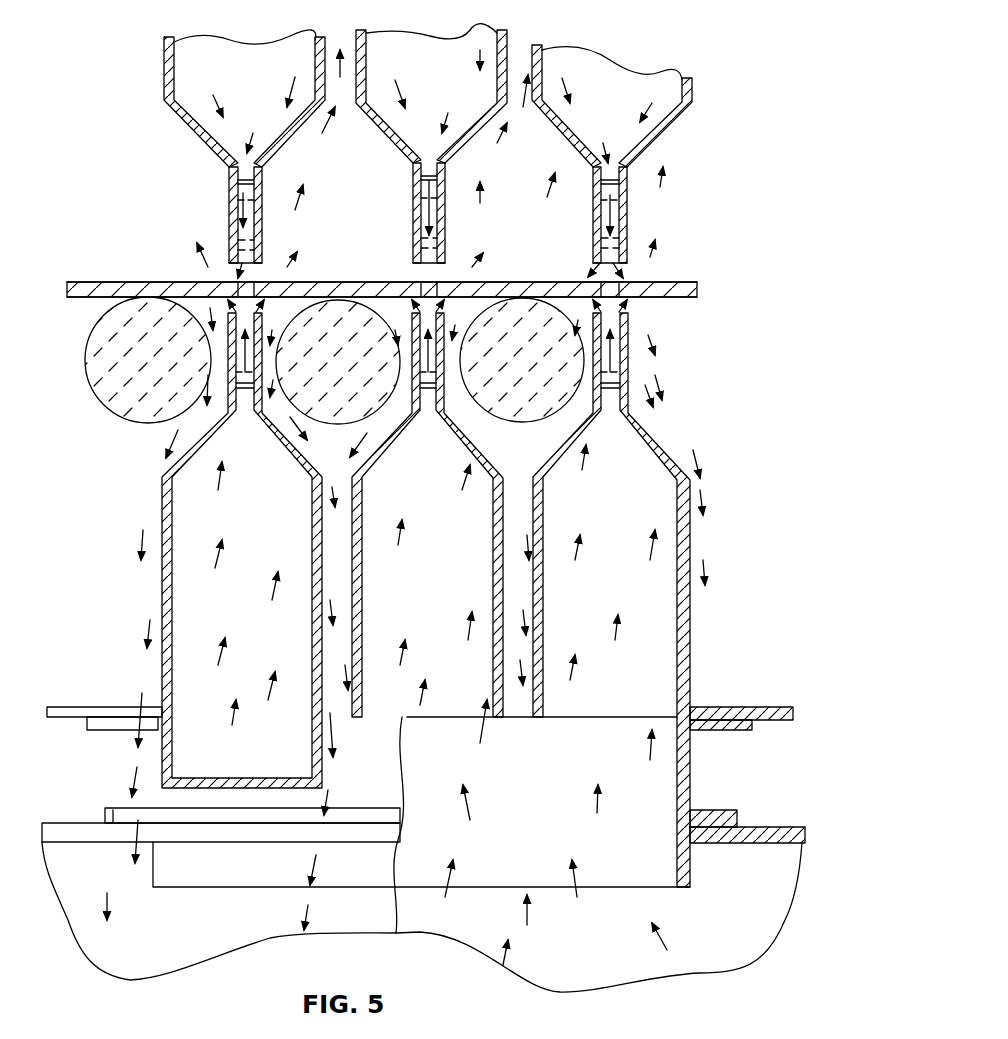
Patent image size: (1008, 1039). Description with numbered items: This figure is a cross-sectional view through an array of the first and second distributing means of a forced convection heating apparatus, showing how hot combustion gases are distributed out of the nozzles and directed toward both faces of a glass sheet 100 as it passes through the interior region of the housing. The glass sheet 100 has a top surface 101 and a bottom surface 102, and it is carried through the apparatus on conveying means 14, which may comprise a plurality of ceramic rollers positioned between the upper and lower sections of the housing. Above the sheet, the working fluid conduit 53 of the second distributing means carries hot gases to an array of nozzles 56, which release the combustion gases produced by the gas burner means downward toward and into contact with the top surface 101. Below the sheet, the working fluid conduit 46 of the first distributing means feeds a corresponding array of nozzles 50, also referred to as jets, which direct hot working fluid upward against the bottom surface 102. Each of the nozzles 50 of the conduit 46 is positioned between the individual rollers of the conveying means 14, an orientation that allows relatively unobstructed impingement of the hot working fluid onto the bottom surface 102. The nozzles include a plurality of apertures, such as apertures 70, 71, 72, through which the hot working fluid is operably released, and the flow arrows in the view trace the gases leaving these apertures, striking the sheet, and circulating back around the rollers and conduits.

The conveying means 14 is at (85, 385).
The working fluid conduit 46 is at (172, 582).
The nozzles 50 is at (344, 284).
The working fluid conduit 53 is at (208, 48).
The nozzles 56 is at (232, 258).
The aperture 70 is at (252, 268).
The aperture 71 is at (255, 181).
The aperture 72 is at (263, 240).
The glass sheet 100 is at (66, 279).
The top surface 101 is at (125, 282).
The bottom surface 102 is at (93, 298).